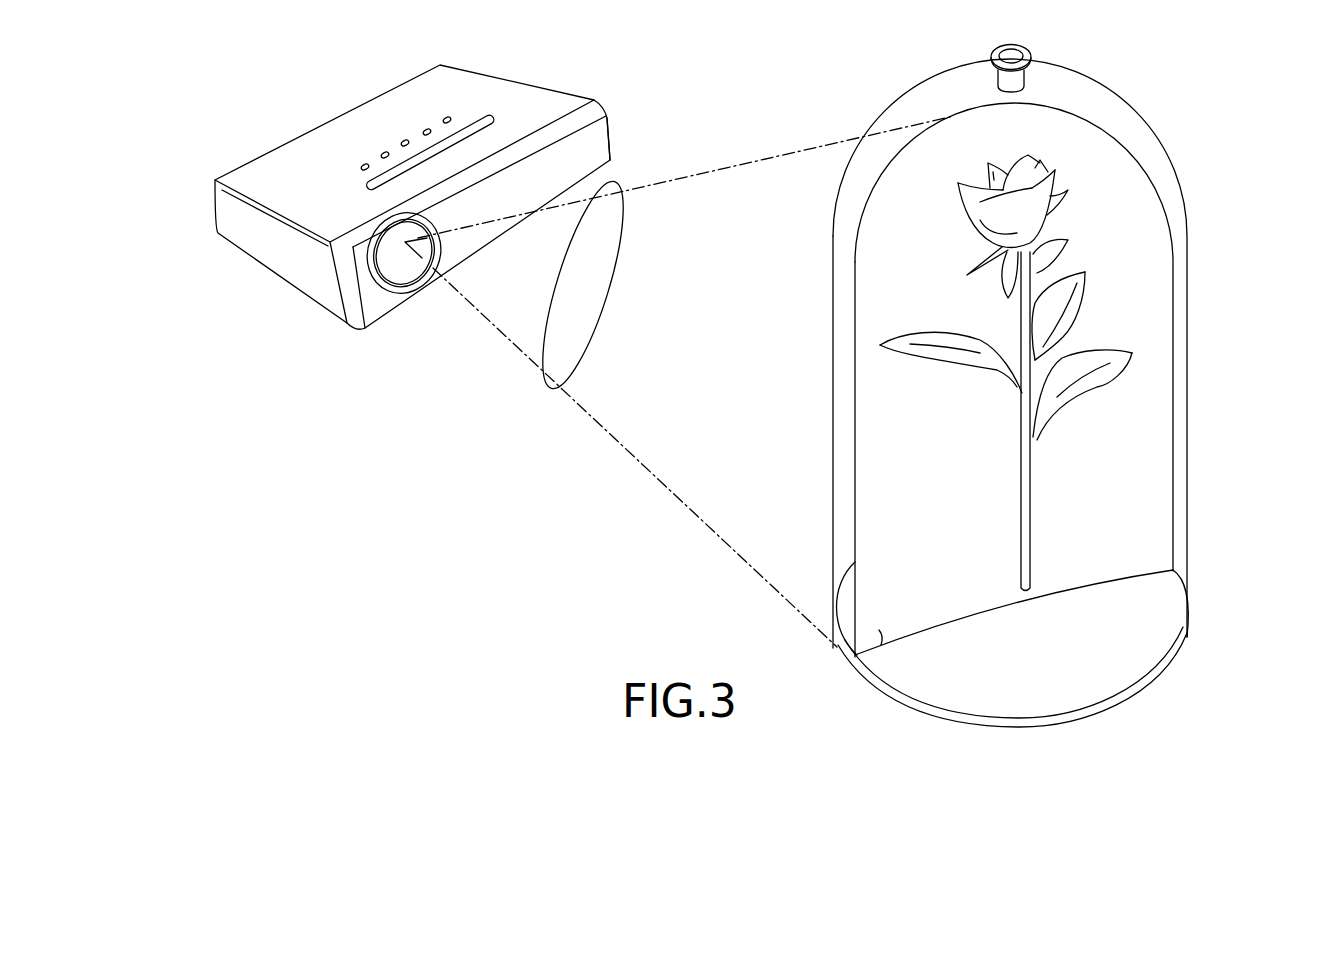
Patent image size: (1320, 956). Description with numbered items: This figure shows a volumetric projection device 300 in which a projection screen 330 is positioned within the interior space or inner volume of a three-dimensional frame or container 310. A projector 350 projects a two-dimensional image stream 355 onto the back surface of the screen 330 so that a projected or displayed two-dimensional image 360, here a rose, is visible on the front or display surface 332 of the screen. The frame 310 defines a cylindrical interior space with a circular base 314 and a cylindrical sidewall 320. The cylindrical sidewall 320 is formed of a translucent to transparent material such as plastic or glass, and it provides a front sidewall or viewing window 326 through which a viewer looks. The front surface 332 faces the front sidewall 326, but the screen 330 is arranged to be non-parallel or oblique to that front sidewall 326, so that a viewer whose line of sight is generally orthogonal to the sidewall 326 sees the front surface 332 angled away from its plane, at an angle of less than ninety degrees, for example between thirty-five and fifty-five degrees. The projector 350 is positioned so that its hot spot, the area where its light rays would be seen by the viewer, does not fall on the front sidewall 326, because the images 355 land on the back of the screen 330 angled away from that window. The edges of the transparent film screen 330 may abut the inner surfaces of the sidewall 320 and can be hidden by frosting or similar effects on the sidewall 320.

The volumetric projection device 300 is at (1014, 363).
The 3D frame or container 310 is at (1014, 644).
The circular base 314 is at (1142, 690).
The cylindrical sidewall 320 is at (1187, 417).
The front sidewall or viewing window 326 is at (1176, 632).
The projection screen 330 is at (836, 620).
The front or display surface 332 is at (880, 632).
The projector 350 is at (212, 153).
The 2D image stream 355 is at (610, 283).
The projected or displayed 2D image 360 is at (1031, 473).